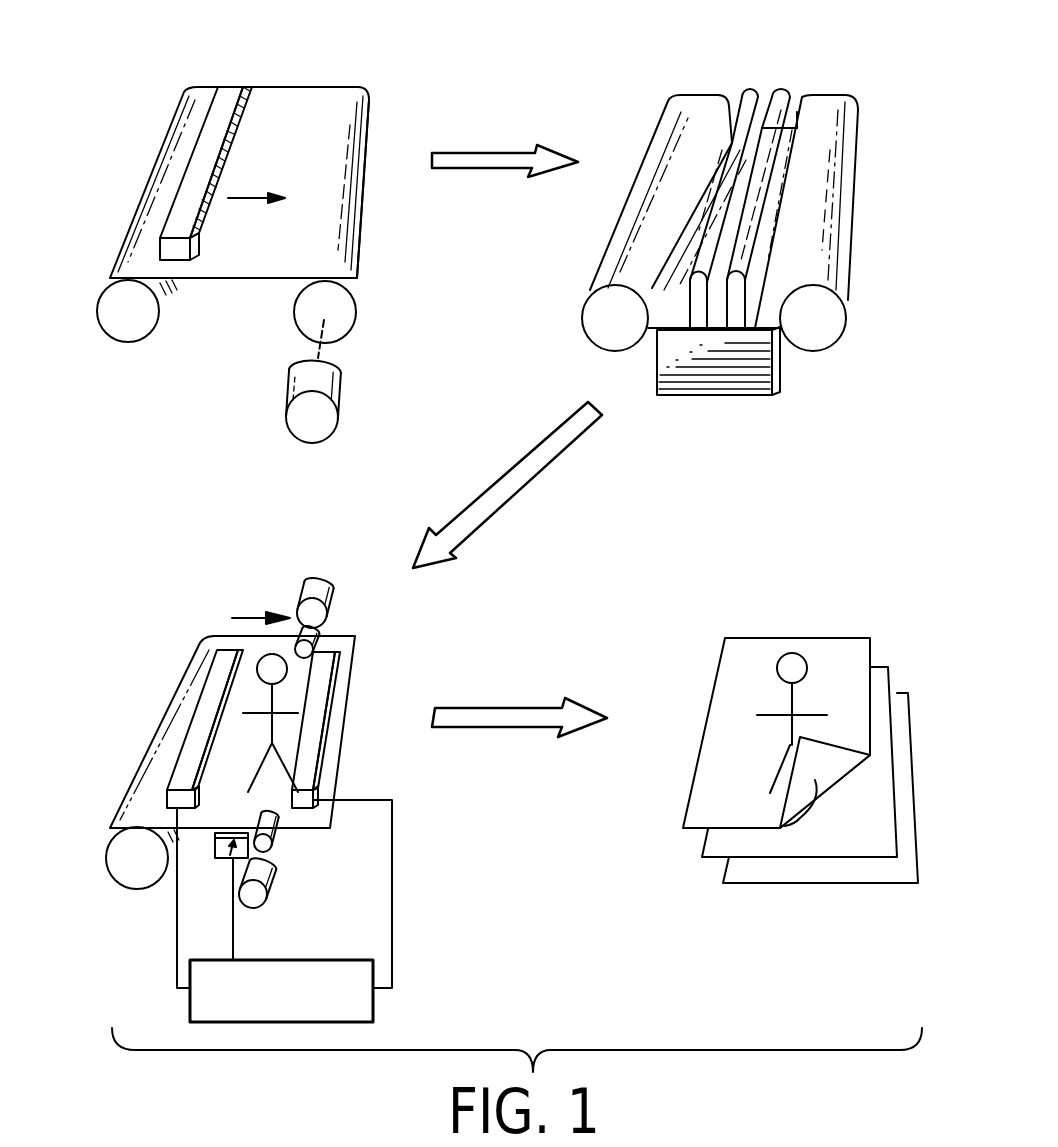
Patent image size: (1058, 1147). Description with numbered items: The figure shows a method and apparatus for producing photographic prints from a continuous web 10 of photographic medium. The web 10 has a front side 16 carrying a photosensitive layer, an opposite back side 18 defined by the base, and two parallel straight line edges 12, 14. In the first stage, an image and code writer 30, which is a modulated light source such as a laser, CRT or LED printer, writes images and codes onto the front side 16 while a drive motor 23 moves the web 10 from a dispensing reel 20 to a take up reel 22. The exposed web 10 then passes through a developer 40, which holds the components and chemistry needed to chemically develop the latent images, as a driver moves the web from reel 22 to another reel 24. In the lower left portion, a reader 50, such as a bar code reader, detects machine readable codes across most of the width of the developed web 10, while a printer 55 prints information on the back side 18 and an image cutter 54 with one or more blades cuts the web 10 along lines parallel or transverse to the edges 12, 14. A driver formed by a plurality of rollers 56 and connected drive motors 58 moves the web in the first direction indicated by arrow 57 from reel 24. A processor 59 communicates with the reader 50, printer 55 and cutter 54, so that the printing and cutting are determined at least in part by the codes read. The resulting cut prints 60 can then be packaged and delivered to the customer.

The web 10 is at (310, 110).
The edge 12 is at (276, 87).
The edge 14 is at (230, 282).
The front side 16 is at (292, 173).
The back side 18 is at (268, 283).
The dispensing reel 20 is at (129, 332).
The take up reel 22 is at (348, 315).
The drive motor 23 is at (338, 397).
The reel 24 is at (823, 330).
The image and code writer 30 is at (227, 88).
The developer 40 is at (748, 370).
The reader 50 is at (213, 700).
The image cutter 54 is at (318, 738).
The printer 55 is at (230, 858).
The rollers 56 is at (315, 629).
The arrow 57 is at (253, 616).
The drive motors 58 is at (320, 582).
The processor 59 is at (375, 1007).
The cut prints 60 is at (900, 692).